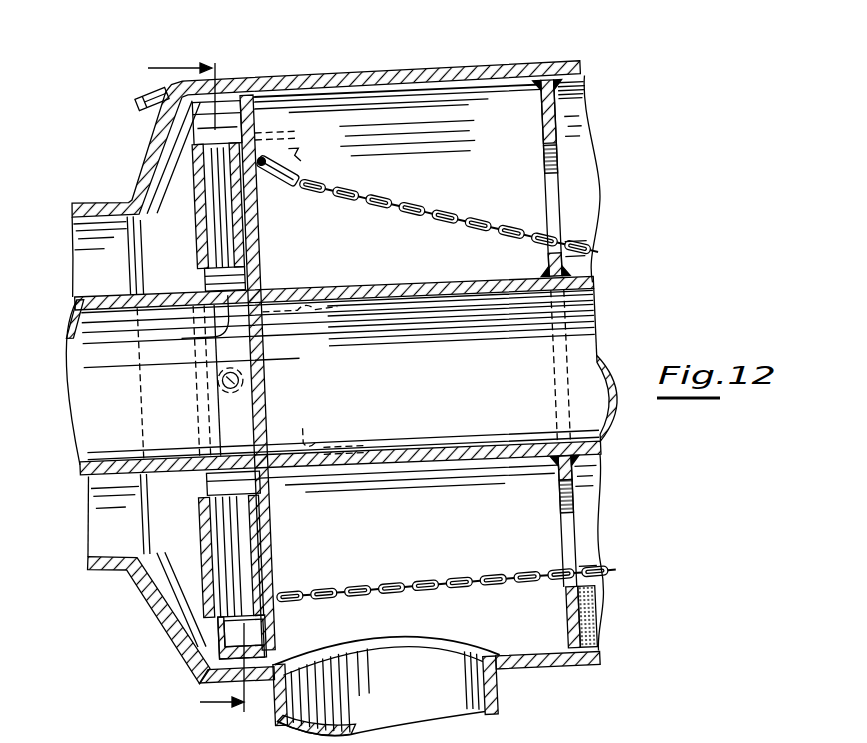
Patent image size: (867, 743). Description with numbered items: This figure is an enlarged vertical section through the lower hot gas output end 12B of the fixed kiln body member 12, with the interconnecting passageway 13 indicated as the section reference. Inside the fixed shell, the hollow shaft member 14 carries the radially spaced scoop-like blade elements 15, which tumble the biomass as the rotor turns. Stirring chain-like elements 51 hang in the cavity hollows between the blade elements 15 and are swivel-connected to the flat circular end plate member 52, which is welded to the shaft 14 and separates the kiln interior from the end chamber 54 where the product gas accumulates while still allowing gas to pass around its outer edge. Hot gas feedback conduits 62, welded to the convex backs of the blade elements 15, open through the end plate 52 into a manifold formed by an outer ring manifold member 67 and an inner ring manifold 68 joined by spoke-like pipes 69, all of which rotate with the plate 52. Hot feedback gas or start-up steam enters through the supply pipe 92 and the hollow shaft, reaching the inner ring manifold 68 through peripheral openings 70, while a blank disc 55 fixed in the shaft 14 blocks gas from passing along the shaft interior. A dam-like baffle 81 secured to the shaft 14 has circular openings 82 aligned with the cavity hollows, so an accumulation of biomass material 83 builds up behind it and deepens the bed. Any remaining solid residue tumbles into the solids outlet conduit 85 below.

The fixed elongated cylindrical kiln body member 12 is at (612, 665).
The output end 12B is at (583, 66).
The interconnecting passageway 13 is at (167, 390).
The hollow shaft member 14 is at (492, 281).
The scoop-like blade elements 15 is at (447, 201).
The chain-like elements 51 is at (336, 186).
The end plate members 52 is at (262, 222).
The end chamber 54 is at (96, 228).
The blank disc 55 is at (265, 360).
The hot gas feedback tubular conduits 62 is at (322, 318).
The outer concentric ring manifold member 67 is at (254, 118).
The inner ring manifold 68 is at (205, 272).
The spoke-like pipes 69 is at (217, 238).
The peripheral openings 70 is at (222, 374).
The dam-like baffle 81 is at (548, 125).
The circular openings 82 is at (552, 175).
The accumulation of biomass material 83 is at (593, 613).
The solids outlet conduit 85 is at (492, 690).
The supply pipe 92 is at (145, 106).